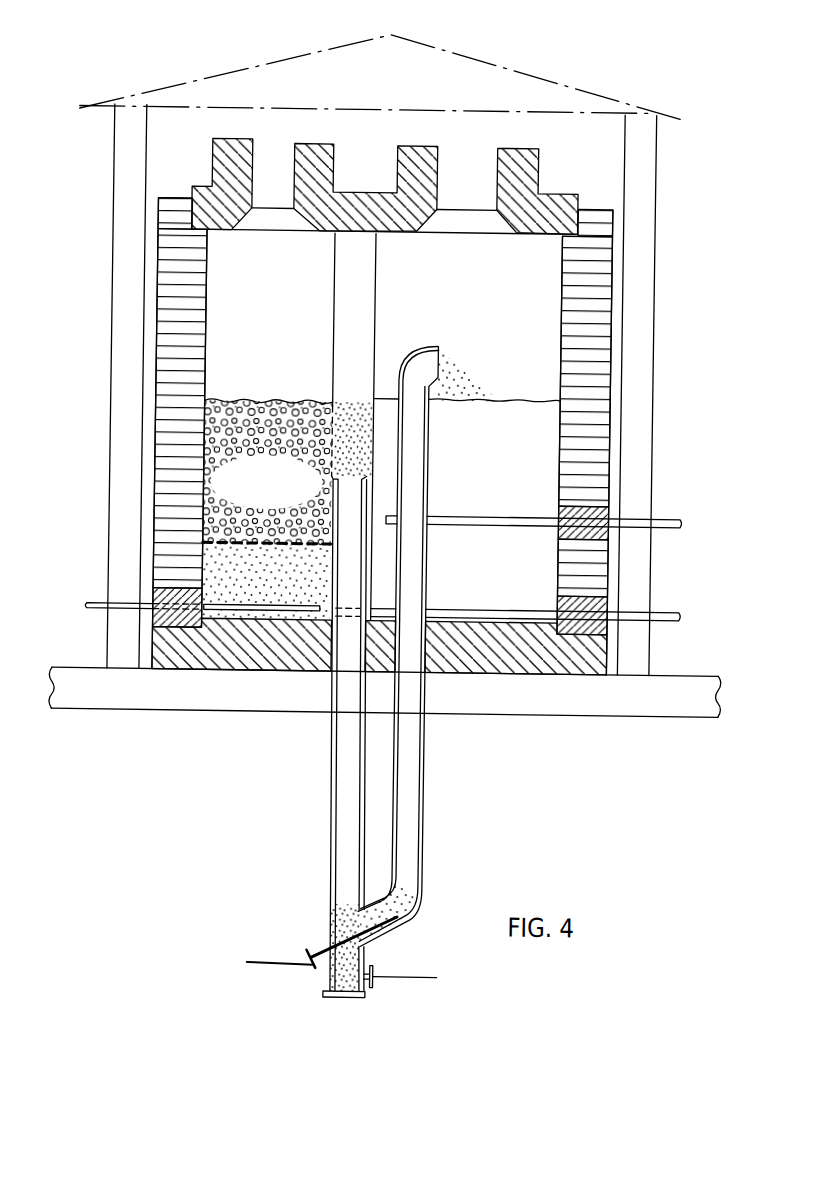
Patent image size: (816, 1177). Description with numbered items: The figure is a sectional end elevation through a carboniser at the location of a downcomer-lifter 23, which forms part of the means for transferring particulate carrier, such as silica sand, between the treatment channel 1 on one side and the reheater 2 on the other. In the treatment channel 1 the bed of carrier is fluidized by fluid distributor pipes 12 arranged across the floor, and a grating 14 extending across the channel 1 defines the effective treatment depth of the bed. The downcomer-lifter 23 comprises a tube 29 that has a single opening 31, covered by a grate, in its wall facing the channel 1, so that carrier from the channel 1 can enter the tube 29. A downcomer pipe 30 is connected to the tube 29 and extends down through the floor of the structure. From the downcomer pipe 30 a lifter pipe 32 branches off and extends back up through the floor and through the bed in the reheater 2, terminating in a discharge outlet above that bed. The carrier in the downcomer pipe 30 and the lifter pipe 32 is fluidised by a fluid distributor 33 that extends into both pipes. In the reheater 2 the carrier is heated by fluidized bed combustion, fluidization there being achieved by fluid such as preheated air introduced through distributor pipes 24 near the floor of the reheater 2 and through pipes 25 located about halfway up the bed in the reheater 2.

The treatment channel 1 is at (150, 328).
The reheater 2 is at (615, 338).
The fluid distributor pipes 12 is at (262, 606).
The grating 14 is at (258, 547).
The downcomer-lifter 23 is at (436, 440).
The distributor pipes 24 is at (473, 609).
The pipes 25 is at (477, 516).
The tube 29 is at (375, 342).
The downcomer pipe 30 is at (335, 740).
The opening 31 is at (320, 426).
The lifter pipe 32 is at (429, 767).
The fluid distributor 33 is at (382, 928).